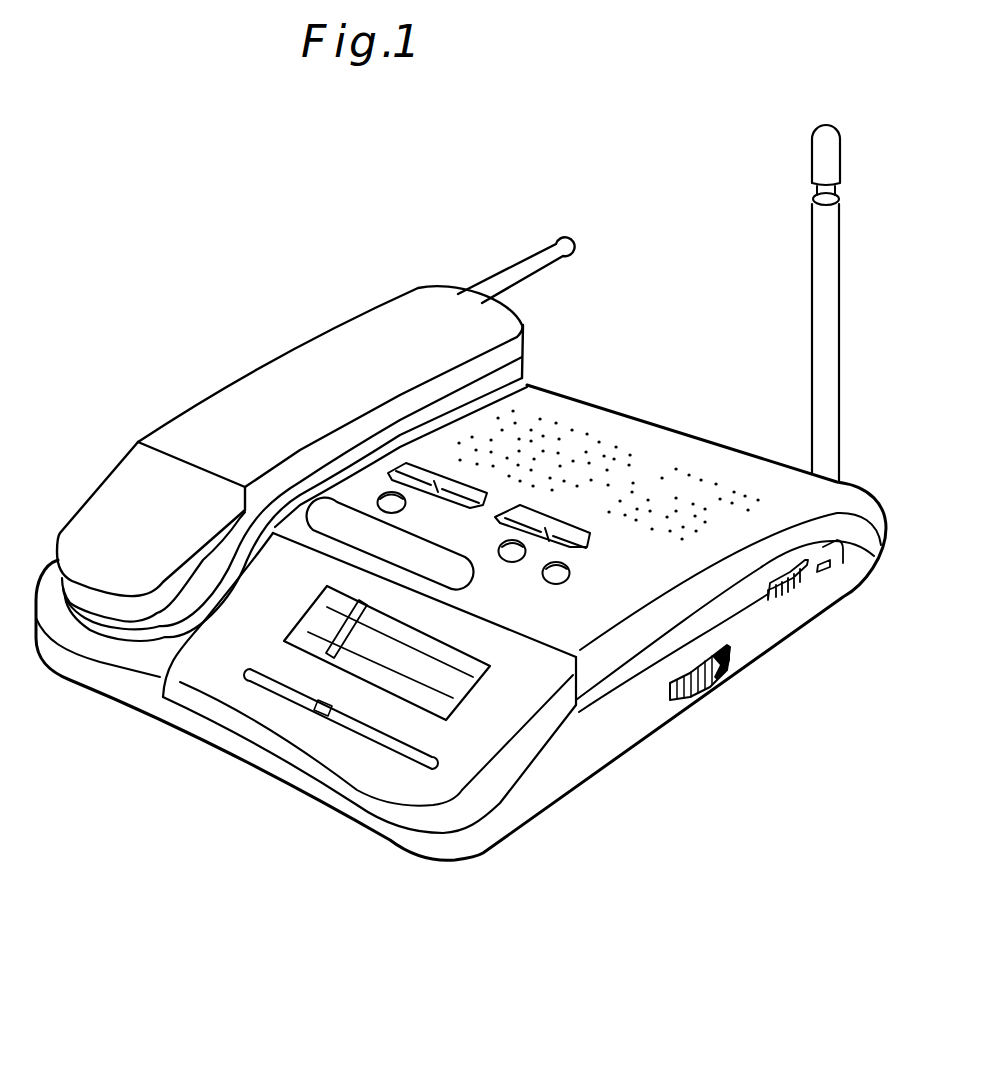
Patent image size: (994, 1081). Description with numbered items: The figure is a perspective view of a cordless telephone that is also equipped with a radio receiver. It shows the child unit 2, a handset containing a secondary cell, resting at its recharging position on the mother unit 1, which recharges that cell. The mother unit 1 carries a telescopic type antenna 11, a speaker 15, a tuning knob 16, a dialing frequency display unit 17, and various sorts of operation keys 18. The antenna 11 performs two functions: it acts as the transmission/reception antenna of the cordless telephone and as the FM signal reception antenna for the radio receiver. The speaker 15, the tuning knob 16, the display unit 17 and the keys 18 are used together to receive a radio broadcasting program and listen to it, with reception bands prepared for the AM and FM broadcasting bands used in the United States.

The mother unit 1 is at (230, 757).
The child unit 2 is at (334, 334).
The telescopic type antenna 11 is at (812, 217).
The speaker 15 is at (697, 528).
The tuning knob 16 is at (687, 700).
The dialing frequency display unit 17 is at (397, 680).
The operation keys 18 is at (565, 530).